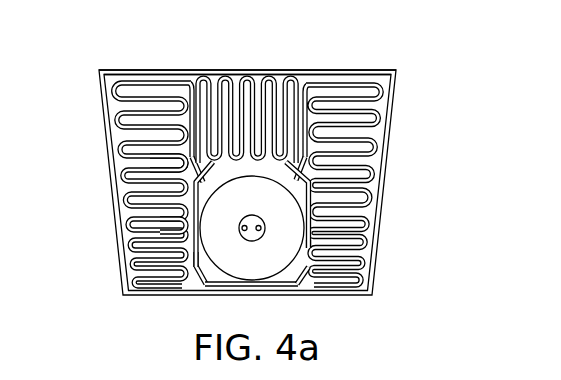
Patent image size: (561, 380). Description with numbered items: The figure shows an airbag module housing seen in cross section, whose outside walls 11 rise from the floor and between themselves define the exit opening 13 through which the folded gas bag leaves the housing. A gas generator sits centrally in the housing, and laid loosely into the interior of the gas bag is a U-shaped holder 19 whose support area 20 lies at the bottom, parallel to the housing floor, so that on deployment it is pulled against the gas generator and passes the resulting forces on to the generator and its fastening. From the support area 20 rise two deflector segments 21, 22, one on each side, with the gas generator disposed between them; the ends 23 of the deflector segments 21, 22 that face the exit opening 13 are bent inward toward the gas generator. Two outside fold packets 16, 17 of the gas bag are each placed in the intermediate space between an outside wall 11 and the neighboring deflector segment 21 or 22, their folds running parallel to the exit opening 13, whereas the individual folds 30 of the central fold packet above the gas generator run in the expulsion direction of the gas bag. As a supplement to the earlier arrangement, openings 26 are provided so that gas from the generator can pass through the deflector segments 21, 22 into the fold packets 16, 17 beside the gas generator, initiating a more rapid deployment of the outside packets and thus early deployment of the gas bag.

The outside walls 11 is at (107, 147).
The exit opening 13 is at (143, 68).
The outside fold packet 16 is at (128, 118).
The outside fold packet 17 is at (358, 140).
The U-shaped holder 19 is at (197, 282).
The support area 20 is at (277, 287).
The deflector segment 21 is at (188, 232).
The deflector segment 22 is at (311, 199).
The ends of the deflector segments 23 is at (194, 200).
The openings 26 is at (193, 258).
The individual folds 30 is at (160, 155).